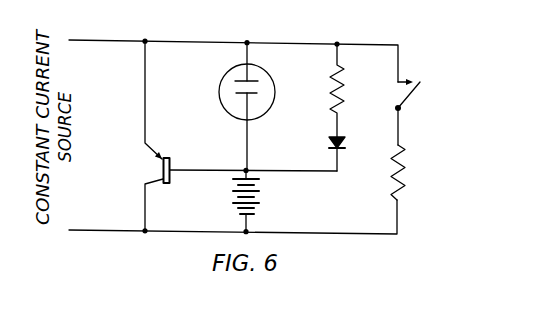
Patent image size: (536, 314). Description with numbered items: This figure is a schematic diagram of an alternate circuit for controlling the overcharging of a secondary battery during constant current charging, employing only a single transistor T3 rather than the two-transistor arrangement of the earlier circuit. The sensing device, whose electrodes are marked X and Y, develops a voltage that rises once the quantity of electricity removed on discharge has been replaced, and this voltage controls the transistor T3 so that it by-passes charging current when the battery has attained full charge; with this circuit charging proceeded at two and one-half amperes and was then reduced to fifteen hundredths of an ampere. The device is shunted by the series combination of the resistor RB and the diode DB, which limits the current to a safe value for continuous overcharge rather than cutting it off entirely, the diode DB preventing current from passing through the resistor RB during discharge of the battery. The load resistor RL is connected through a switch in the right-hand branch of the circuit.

The transistor T3 is at (172, 182).
The resistor RB is at (353, 90).
The diode DB is at (353, 153).
The load resistor RL is at (413, 172).
The tube electrode X is at (240, 82).
The tube electrode Y is at (240, 97).